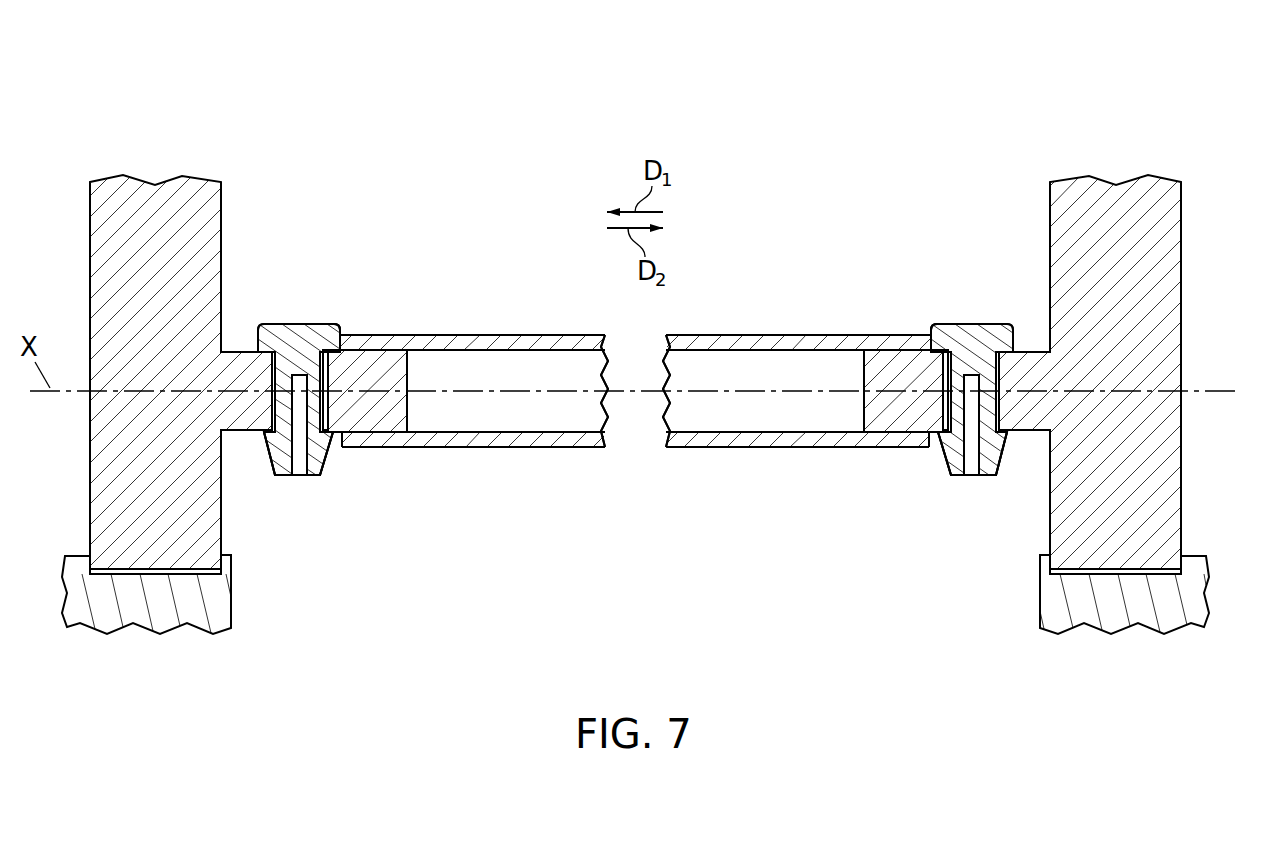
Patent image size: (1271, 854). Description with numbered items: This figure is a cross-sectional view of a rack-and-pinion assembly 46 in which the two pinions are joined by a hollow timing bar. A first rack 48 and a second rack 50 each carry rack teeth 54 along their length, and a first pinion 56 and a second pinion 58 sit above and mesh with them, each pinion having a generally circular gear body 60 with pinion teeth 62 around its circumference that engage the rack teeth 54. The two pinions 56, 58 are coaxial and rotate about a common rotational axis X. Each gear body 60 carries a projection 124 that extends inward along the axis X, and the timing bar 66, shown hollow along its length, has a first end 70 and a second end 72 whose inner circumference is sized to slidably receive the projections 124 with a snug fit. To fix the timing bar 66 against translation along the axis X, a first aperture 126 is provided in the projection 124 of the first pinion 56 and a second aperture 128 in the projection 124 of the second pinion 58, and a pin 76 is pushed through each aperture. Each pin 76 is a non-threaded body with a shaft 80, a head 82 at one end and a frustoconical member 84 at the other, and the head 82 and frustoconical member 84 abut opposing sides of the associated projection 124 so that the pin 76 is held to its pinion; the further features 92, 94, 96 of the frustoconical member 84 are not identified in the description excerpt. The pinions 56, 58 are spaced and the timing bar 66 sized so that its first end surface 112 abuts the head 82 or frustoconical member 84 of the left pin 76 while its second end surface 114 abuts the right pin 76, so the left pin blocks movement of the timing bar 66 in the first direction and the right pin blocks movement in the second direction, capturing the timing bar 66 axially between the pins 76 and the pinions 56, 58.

The rack-and-pinion assembly 46 is at (287, 142).
The first rack 48 is at (122, 633).
The second rack 50 is at (1149, 633).
The rack teeth 54 is at (232, 572).
The first pinion 56 is at (186, 177).
The second pinion 58 is at (1085, 177).
The gear body 60 is at (221, 200).
The pinion teeth 62 is at (85, 557).
The timing bar 66 is at (562, 335).
The first end 70 is at (392, 335).
The second end 72 is at (879, 335).
The pin 76 is at (282, 324).
The shaft 80 is at (328, 420).
The head 82 is at (264, 324).
The frustoconical member 84 is at (333, 448).
The slot 92 is at (300, 468).
The first leg 94 is at (283, 477).
The second leg 96 is at (317, 477).
The first end surface 112 is at (326, 340).
The second end surface 114 is at (945, 340).
The projection 124 is at (407, 385).
The first aperture 126 is at (272, 420).
The second aperture 128 is at (999, 420).